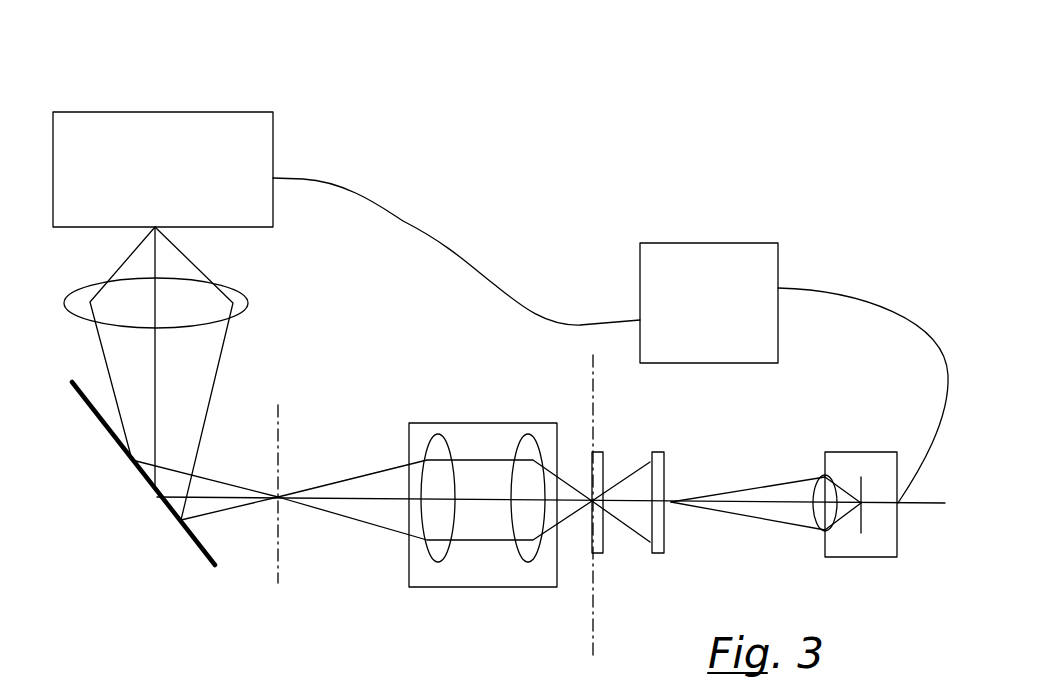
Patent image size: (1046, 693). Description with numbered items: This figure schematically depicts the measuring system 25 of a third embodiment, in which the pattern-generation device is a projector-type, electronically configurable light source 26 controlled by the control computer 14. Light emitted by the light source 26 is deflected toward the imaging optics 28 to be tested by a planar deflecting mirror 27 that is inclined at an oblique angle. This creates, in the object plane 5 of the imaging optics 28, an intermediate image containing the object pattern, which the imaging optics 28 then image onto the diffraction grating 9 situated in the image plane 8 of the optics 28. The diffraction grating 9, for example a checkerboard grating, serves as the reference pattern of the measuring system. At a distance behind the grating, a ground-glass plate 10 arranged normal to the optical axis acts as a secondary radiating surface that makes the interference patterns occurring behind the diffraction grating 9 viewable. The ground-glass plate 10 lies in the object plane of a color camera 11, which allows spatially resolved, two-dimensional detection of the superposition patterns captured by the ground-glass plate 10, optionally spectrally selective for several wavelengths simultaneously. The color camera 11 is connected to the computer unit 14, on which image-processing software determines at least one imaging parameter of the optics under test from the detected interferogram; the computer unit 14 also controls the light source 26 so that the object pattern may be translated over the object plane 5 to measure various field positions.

The measuring system 25 is at (550, 126).
The light source unit 26 is at (263, 143).
The computer unit 14 is at (778, 243).
The planar deflecting mirror 27 is at (197, 548).
The object plane 5 is at (278, 412).
The imaging optics 28 is at (482, 587).
The image plane 8 is at (593, 657).
The diffraction grating 9 is at (600, 553).
The ground-glass plate 10 is at (660, 553).
The color camera 11 is at (862, 560).